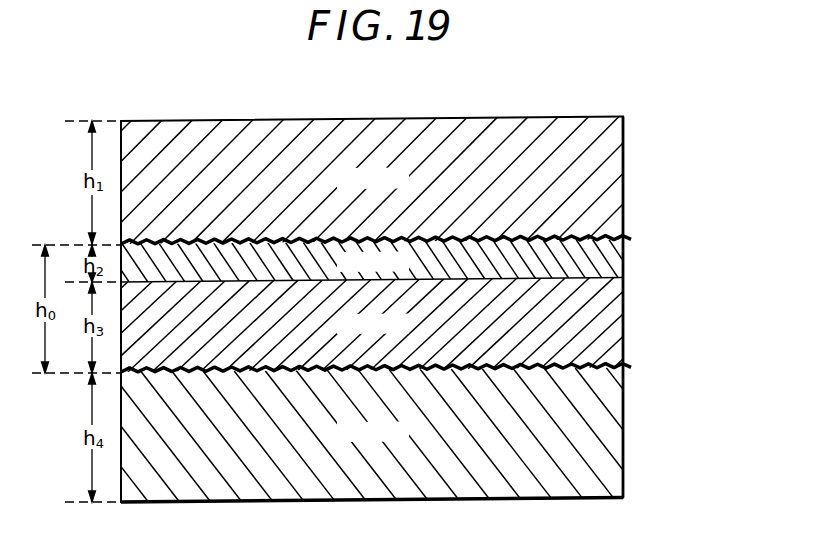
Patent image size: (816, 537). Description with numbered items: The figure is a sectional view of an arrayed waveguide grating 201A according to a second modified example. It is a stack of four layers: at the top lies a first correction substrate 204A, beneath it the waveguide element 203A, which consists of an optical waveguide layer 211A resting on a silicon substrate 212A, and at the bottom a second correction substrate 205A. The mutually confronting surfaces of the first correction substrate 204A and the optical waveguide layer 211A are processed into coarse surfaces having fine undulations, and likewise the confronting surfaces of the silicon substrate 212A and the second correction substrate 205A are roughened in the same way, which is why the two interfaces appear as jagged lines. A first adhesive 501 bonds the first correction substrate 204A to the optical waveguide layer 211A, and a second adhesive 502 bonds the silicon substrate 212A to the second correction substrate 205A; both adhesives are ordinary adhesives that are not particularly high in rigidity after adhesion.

The arrayed waveguide grating 201A is at (513, 108).
The first correction substrate 204A is at (612, 163).
The first adhesive 501 is at (604, 240).
The optical waveguide layer 211A is at (612, 262).
The silicon substrate 212A is at (612, 328).
The waveguide element 203A is at (705, 240).
The second adhesive 502 is at (604, 376).
The second correction substrate 205A is at (615, 433).